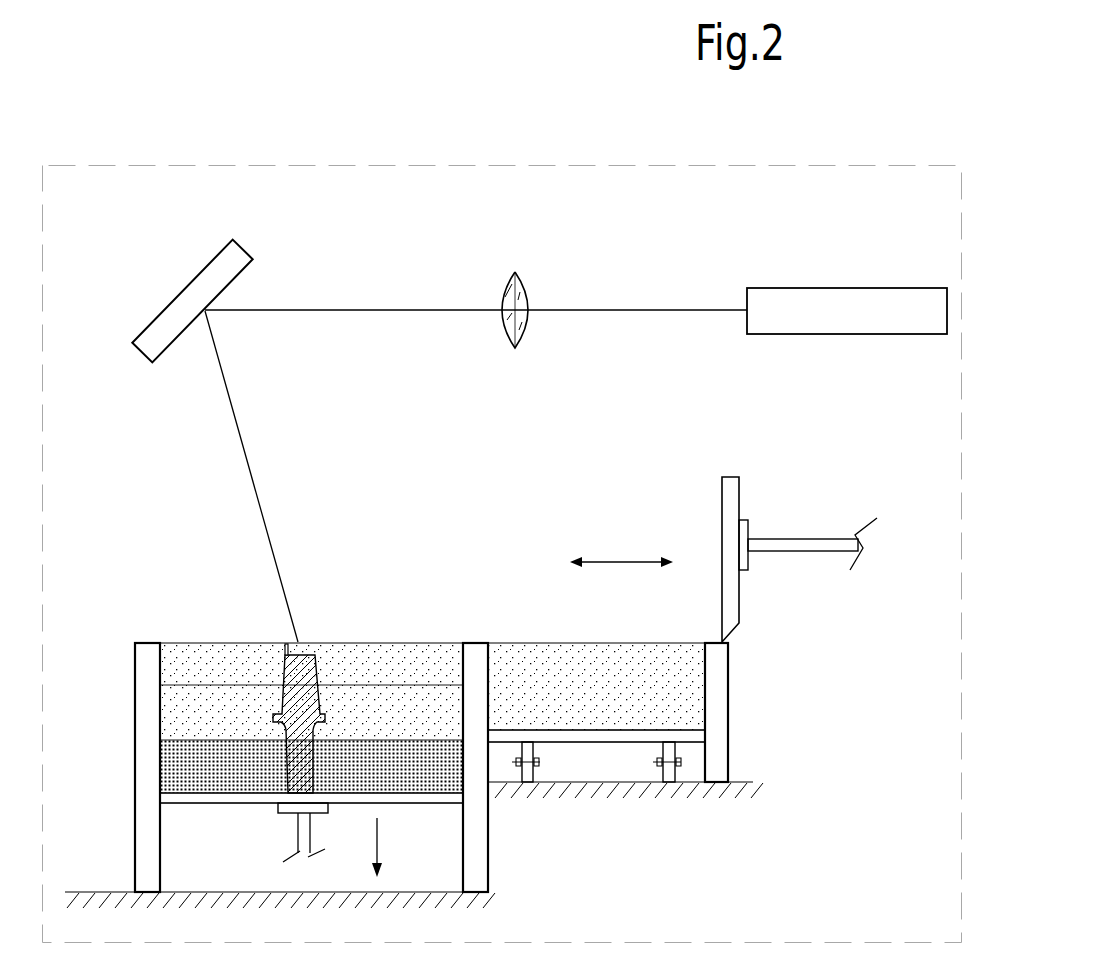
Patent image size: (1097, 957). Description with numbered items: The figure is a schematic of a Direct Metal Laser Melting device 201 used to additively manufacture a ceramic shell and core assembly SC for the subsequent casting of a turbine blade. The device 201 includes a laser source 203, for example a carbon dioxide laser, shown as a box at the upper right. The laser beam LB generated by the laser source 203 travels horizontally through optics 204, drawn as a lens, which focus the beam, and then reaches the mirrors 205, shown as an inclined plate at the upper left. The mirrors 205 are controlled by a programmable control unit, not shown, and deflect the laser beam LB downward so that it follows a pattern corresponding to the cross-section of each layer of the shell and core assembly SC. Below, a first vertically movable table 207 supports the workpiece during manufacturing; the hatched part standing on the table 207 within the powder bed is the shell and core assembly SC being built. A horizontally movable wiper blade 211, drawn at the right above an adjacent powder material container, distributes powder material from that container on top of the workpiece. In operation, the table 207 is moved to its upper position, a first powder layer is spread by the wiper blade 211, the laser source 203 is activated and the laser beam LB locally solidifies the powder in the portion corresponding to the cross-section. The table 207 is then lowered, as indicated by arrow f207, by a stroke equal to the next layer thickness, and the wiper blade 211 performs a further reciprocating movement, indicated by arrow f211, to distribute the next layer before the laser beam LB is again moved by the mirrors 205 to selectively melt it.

The DMLM device 201 is at (392, 150).
The laser source 203 is at (842, 307).
The optics 204 is at (528, 298).
The mirrors 205 is at (188, 297).
The first vertically movable table 207 is at (257, 800).
The wiper blade 211 is at (730, 500).
The laser beam LB is at (379, 310).
The shell and core assembly SC is at (313, 630).
The lowering movement of table f207 is at (380, 846).
The reciprocating movement of wiper blade f211 is at (616, 560).